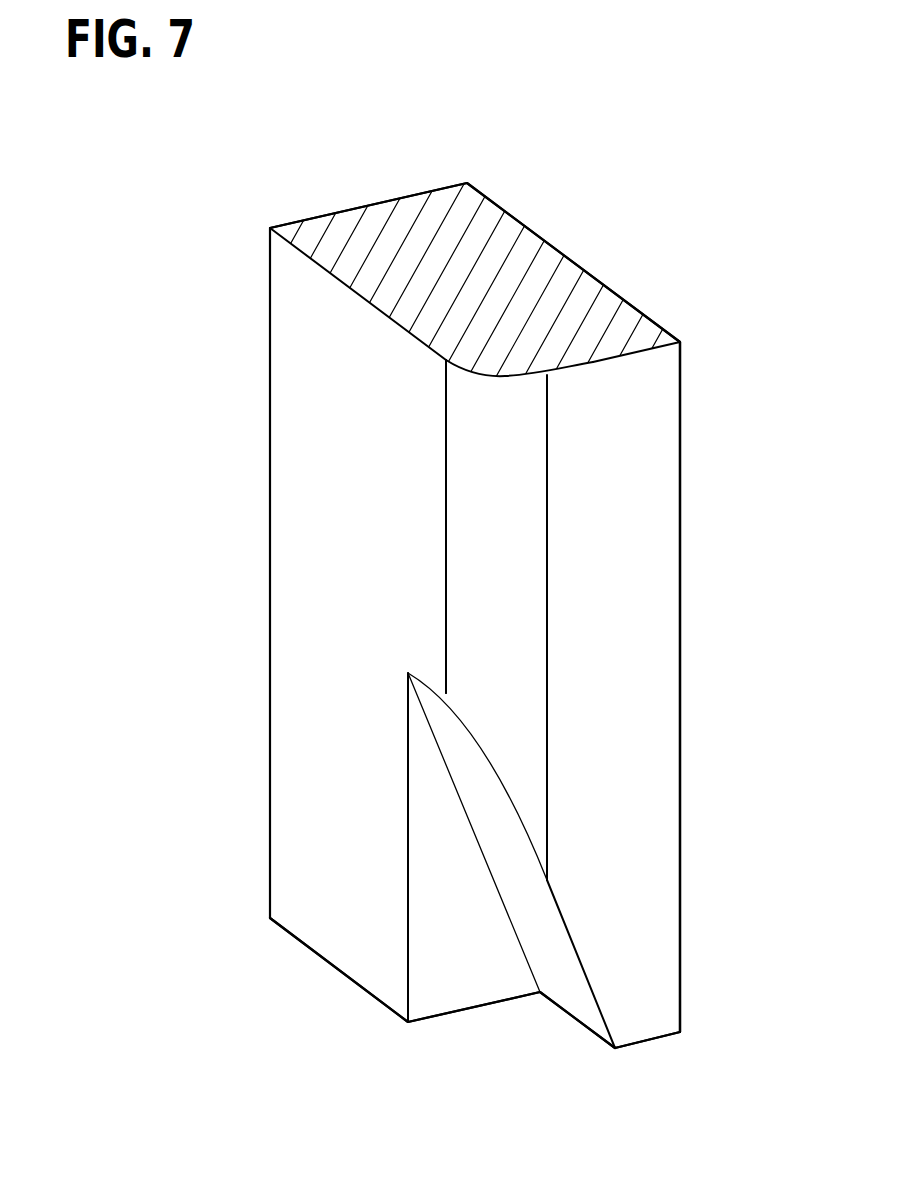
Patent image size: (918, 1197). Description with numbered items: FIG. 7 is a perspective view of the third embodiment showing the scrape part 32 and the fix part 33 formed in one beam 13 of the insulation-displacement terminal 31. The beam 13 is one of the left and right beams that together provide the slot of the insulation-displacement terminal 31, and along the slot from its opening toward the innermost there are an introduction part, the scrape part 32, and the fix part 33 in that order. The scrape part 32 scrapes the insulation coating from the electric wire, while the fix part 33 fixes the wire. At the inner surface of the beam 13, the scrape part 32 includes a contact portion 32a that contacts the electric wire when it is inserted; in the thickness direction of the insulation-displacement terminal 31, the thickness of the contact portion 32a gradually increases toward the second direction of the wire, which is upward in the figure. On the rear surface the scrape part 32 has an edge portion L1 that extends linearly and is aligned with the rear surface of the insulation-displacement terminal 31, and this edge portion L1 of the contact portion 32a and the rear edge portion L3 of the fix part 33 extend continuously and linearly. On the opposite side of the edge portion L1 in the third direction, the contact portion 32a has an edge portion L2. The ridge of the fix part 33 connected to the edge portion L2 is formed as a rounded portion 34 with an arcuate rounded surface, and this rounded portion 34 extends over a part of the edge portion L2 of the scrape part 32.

The beam 13 is at (290, 812).
The insulation-displacement terminal 31 is at (237, 388).
The scrape part 32 is at (515, 1013).
The contact portion 32a is at (630, 872).
The fix part 33 is at (630, 438).
The rounded portion 34 is at (465, 535).
The edge portion L1 is at (681, 967).
The edge portion L2 is at (553, 894).
The rear edge portion L3 is at (681, 553).